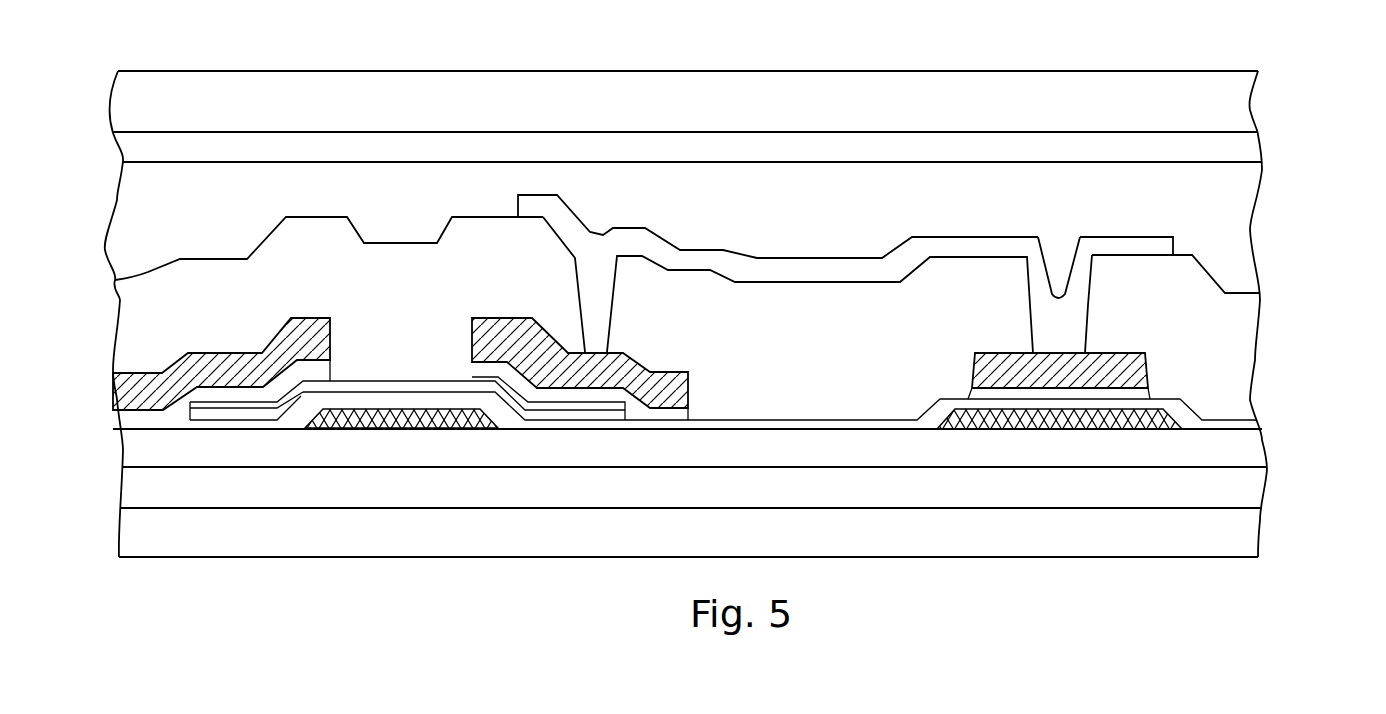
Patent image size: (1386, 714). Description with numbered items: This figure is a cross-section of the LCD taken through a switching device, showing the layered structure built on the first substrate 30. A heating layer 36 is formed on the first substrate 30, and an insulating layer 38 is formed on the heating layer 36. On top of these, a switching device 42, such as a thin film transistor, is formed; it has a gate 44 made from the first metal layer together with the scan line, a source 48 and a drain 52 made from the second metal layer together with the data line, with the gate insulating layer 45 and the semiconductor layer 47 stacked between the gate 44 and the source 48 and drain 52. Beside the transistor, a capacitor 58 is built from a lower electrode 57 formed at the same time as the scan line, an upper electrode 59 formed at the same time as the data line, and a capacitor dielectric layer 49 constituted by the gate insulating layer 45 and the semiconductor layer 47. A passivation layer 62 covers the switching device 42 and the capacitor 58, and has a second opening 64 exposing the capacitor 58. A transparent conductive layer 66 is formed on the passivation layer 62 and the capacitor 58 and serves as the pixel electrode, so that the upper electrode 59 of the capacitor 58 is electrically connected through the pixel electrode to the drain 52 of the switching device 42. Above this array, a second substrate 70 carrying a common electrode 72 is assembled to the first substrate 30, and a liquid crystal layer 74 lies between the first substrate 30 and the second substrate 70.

The first substrate 30 is at (1237, 533).
The heating layer 36 is at (1237, 490).
The insulating layer 38 is at (1237, 450).
The switching device 42 is at (400, 435).
The gate 44 is at (405, 432).
The gate insulating layer 45 is at (123, 425).
The semiconductor layer 47 is at (198, 416).
The source 48 is at (217, 352).
The capacitor dielectric layer 49 is at (733, 415).
The drain 52 is at (665, 375).
The lower electrode 57 is at (1117, 432).
The capacitor 58 is at (1134, 438).
The upper electrode 59 is at (1160, 360).
The passivation layer 62 is at (1230, 328).
The second opening 64 is at (1060, 243).
The transparent conductive layer 66 is at (1160, 247).
The second substrate 70 is at (1237, 97).
The common electrode 72 is at (1237, 147).
The liquid crystal layer 74 is at (1237, 198).